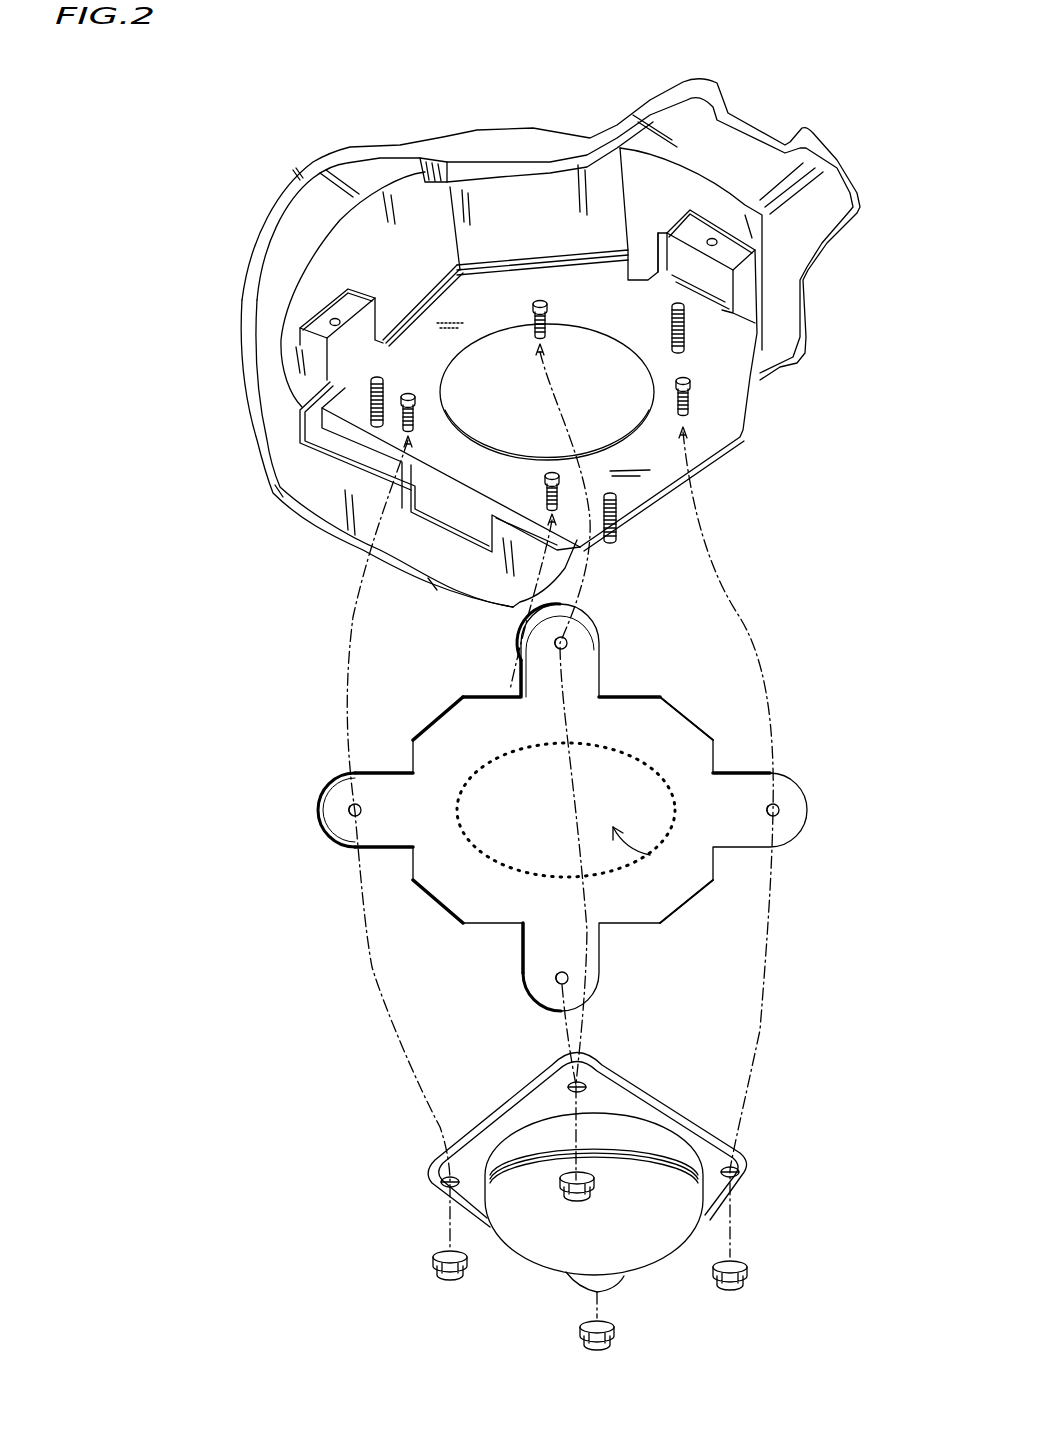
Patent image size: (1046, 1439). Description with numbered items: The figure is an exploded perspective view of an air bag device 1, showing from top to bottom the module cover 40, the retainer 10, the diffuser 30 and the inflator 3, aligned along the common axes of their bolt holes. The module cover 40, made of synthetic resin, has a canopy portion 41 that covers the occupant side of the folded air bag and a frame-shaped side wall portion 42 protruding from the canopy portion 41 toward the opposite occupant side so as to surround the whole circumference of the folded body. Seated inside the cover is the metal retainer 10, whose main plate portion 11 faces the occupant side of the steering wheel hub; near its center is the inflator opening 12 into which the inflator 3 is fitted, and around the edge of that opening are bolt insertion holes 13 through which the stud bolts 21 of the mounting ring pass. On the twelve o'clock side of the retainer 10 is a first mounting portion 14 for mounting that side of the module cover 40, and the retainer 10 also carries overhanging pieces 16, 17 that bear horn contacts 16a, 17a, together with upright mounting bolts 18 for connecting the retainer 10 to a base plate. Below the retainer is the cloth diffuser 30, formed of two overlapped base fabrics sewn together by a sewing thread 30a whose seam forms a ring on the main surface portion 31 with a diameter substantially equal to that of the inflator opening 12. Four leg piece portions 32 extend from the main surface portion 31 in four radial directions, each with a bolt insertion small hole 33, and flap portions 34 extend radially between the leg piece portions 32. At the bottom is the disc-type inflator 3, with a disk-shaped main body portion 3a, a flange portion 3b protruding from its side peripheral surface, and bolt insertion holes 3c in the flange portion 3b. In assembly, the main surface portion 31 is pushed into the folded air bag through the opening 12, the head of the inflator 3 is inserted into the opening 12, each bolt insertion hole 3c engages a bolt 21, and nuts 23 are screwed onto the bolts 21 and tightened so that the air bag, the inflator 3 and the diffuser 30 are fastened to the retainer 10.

The air bag device 1 is at (385, 120).
The module cover 40 is at (525, 112).
The canopy portion 41 is at (450, 147).
The side wall portion 42 is at (435, 265).
The retainer 10 is at (713, 420).
The main plate portion 11 is at (727, 387).
The inflator opening 12 is at (475, 440).
The bolt insertion hole 13 is at (548, 305).
The first mounting portion 14 is at (455, 508).
The overhanging piece 16 is at (365, 335).
The horn contact 16a is at (335, 318).
The overhanging piece 17 is at (672, 252).
The horn contact 17a is at (712, 238).
The mounting bolt 18 is at (383, 400).
The bolt 21 is at (548, 340).
The diffuser 30 is at (420, 710).
The sewing thread 30a is at (513, 868).
The main surface portion 31 is at (650, 855).
The leg piece portion 32 is at (380, 793).
The bolt insertion small hole 33 is at (569, 643).
The flap portion 34 is at (443, 703).
The inflator 3 is at (407, 1158).
The main body portion 3a is at (650, 1240).
The flange portion 3b is at (660, 1120).
The bolt insertion hole 3c is at (568, 1087).
The nut 23 is at (600, 1195).